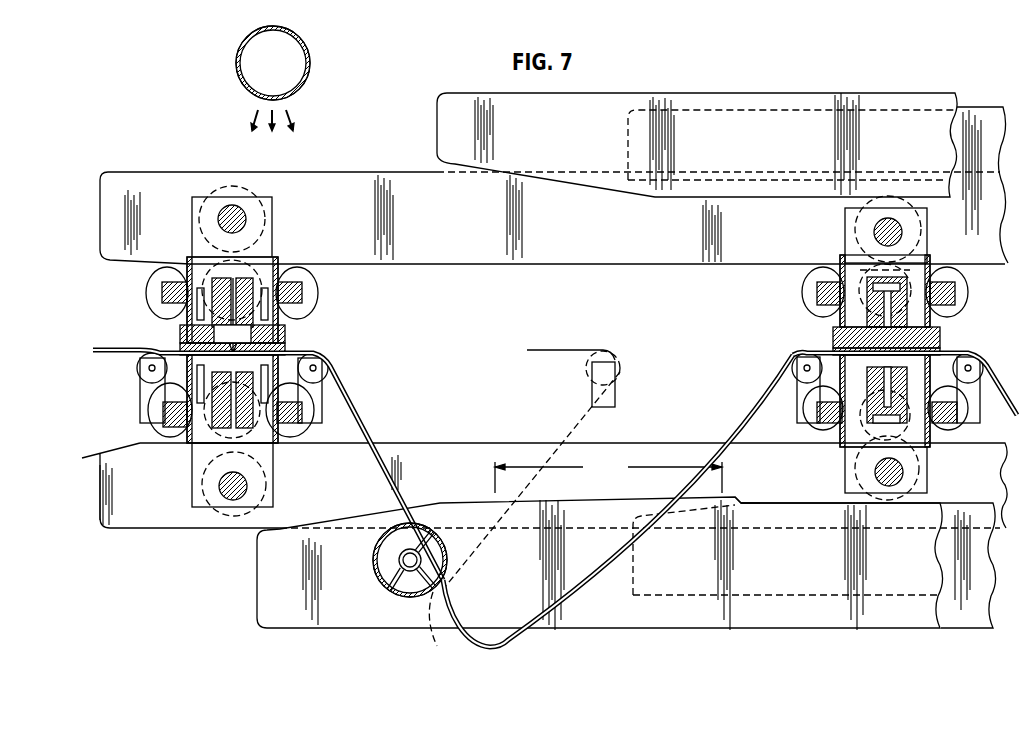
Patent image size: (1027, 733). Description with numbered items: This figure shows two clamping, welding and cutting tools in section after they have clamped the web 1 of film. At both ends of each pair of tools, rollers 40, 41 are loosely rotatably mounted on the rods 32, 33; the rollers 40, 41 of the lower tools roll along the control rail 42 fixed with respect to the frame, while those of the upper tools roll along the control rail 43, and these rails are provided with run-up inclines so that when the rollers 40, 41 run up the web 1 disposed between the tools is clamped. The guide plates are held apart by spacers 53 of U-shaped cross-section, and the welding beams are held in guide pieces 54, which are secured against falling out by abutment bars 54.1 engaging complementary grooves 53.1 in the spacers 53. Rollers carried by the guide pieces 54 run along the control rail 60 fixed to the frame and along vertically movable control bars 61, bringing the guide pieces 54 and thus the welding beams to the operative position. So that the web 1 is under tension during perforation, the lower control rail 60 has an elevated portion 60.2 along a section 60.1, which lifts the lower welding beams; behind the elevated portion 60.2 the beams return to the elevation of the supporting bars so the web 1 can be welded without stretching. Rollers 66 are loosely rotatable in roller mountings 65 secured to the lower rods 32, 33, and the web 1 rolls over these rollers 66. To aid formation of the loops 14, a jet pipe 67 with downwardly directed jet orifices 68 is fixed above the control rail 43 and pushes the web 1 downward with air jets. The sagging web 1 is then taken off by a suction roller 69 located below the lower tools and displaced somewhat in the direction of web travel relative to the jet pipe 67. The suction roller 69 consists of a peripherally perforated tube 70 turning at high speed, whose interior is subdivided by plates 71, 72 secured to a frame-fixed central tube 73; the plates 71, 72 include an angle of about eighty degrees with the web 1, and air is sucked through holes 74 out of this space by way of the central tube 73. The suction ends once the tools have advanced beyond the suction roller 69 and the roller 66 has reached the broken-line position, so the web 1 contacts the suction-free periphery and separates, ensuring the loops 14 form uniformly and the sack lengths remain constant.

The web 1 is at (360, 421).
The loops 14 is at (578, 603).
The rod 32 is at (165, 292).
The rod 33 is at (302, 292).
The roller 40 is at (163, 282).
The roller 41 is at (308, 308).
The control rail 42 is at (167, 518).
The control rail 43 is at (163, 186).
The spacer 53 is at (276, 262).
The groove 53.1 is at (852, 262).
The guide piece 54 is at (271, 230).
The abutment bar 54.1 is at (895, 287).
The control rail 60 is at (437, 127).
The section 60.1 is at (608, 473).
The elevated portion 60.2 is at (713, 500).
The control bar 61 is at (628, 131).
The roller mounting 65 is at (148, 392).
The roller 66 is at (138, 366).
The jet pipe 67 is at (308, 68).
The jet orifices 68 is at (290, 90).
The suction roller 69 is at (374, 576).
The tube 70 is at (377, 553).
The plate 71 is at (433, 533).
The plate 72 is at (427, 583).
The central tube 73 is at (396, 573).
The holes 74 is at (423, 559).